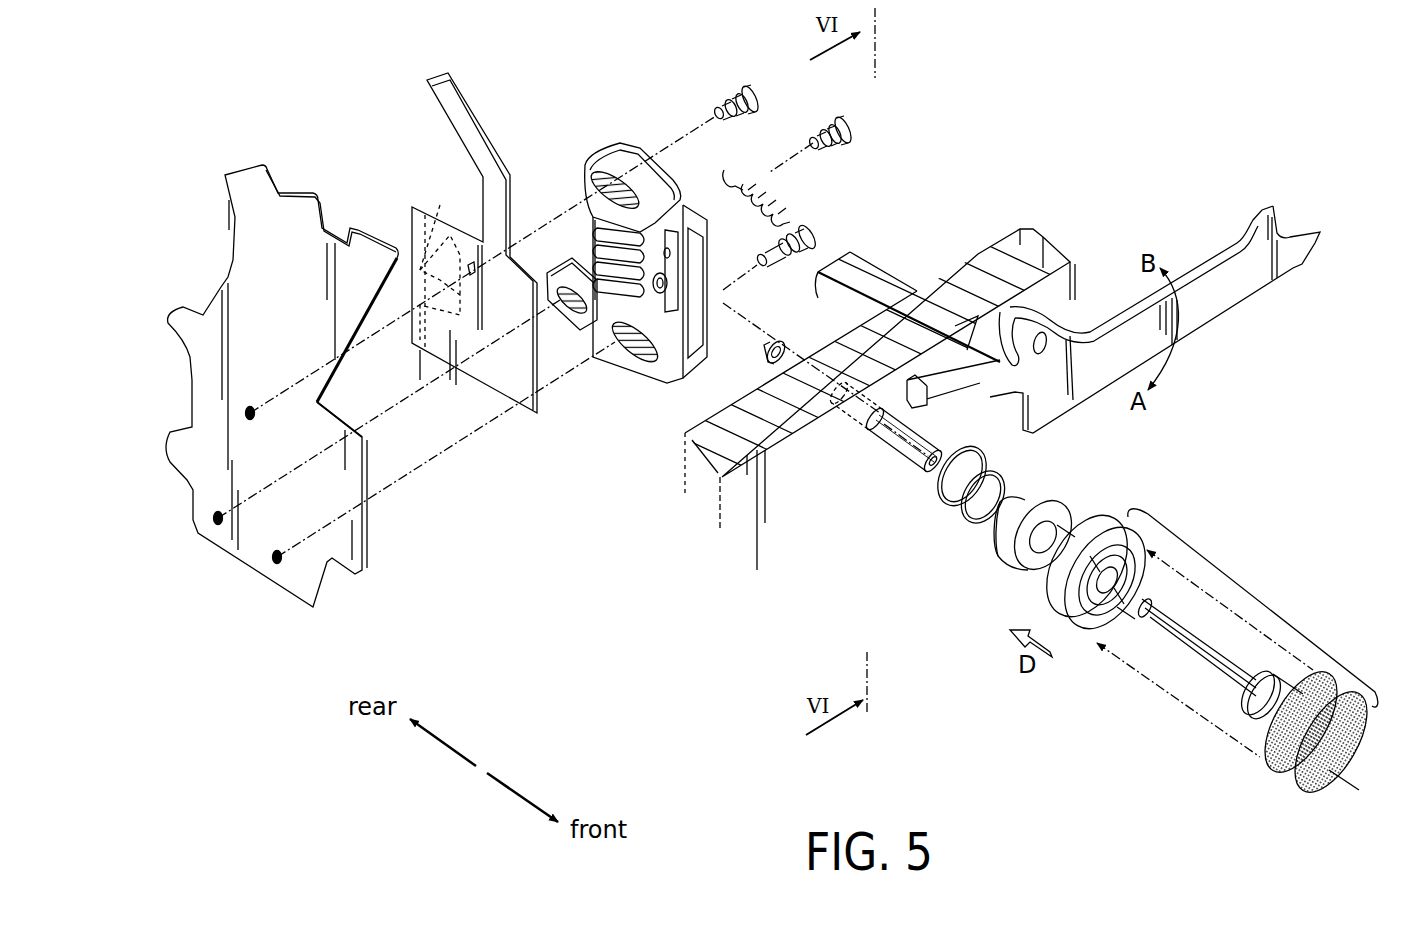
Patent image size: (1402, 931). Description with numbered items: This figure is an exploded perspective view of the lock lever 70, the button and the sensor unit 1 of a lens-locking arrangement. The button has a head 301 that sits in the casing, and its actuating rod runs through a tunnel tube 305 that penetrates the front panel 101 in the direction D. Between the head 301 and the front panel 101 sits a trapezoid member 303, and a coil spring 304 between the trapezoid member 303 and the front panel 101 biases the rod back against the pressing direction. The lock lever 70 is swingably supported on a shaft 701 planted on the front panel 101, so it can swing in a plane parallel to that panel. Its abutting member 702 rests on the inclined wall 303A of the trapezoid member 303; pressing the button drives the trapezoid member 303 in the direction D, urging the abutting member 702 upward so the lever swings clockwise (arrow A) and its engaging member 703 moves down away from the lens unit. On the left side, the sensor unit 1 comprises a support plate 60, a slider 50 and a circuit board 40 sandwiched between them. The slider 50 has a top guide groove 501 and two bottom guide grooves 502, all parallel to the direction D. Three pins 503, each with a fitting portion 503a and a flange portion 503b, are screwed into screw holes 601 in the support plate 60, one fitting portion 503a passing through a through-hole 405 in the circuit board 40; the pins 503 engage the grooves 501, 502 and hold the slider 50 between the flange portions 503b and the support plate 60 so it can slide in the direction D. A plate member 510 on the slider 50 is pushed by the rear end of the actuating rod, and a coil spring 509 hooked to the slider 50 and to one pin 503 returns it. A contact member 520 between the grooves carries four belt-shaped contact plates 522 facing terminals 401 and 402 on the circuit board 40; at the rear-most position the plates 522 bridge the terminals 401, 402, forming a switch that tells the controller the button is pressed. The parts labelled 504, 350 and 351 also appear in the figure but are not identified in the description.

The sensor unit 1 is at (505, 565).
The circuit board 40 is at (480, 382).
The terminal 401 is at (436, 235).
The terminal 402 is at (412, 372).
The through-hole 405 is at (475, 275).
The slider 50 is at (625, 127).
The top guide groove 501 is at (586, 180).
The bottom guide grooves 502 is at (600, 330).
The pins 503 is at (745, 88).
The fitting portion 503a is at (714, 113).
The flange portion 503b is at (757, 99).
The screw 504 is at (808, 242).
The coil spring 509 is at (785, 205).
The plate member 510 is at (770, 354).
The contact member 520 is at (700, 380).
The contact plates 522 is at (594, 240).
The support plate 60 is at (345, 520).
The screw holes 601 is at (250, 411).
The lock lever 70 is at (1197, 347).
The shaft 701 is at (1056, 325).
The abutting member 702 is at (932, 403).
The engaging member 703 is at (1252, 220).
The front panel 101 is at (972, 268).
The head 301 is at (1270, 594).
The trapezoid member 303 is at (1022, 571).
The inclined wall 303A is at (1045, 503).
The coil spring 304 is at (962, 516).
The tunnel tube 305 is at (890, 460).
The shaft 350 is at (1200, 665).
The boss 351 is at (825, 293).